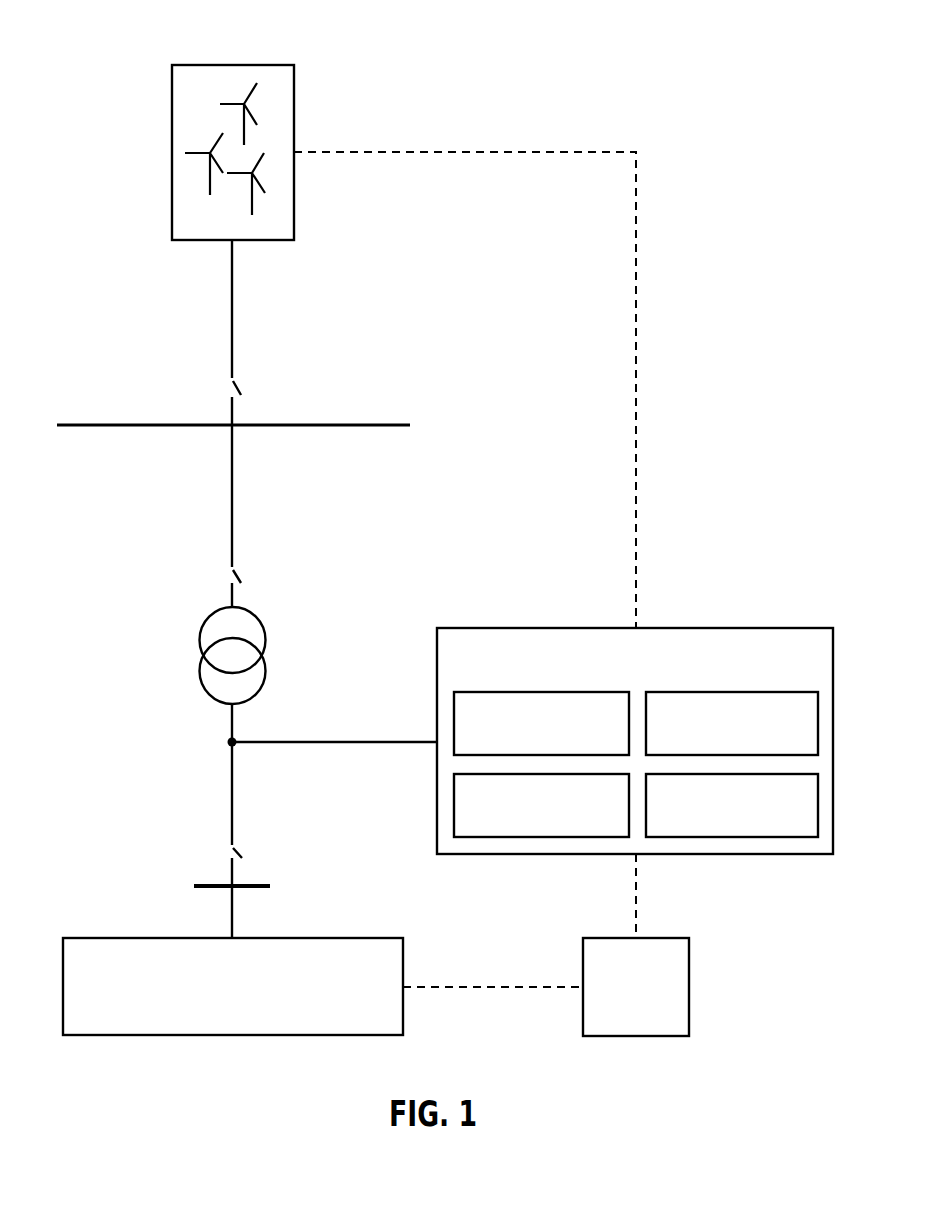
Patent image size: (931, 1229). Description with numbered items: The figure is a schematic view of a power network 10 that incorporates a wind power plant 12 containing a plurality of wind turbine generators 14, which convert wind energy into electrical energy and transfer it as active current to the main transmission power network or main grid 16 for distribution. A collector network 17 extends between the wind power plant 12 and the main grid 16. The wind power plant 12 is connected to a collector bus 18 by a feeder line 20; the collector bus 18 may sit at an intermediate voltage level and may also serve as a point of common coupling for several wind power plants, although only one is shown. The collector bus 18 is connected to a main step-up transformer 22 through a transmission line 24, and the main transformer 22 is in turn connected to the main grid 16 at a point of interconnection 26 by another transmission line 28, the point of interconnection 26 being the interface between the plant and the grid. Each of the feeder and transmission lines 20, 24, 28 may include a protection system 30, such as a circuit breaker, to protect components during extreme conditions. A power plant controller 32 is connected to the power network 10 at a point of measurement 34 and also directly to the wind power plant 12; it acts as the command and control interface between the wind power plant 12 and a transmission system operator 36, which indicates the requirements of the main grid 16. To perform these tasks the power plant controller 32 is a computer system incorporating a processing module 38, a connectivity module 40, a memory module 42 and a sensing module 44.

The power network 10 is at (672, 36).
The wind power plant 12 is at (296, 90).
The wind turbine generators 14 is at (214, 88).
The main transmission power network 16 is at (105, 937).
The collector network 17 is at (78, 358).
The collector bus 18 is at (385, 423).
The feeder line 20 is at (233, 312).
The main step-up transformer 22 is at (255, 610).
The transmission line 24 is at (234, 503).
The point of interconnection 26 is at (263, 883).
The transmission line 28 is at (235, 722).
The protection system 30 is at (243, 380).
The power plant controller 32 is at (493, 627).
The point of measurement 34 is at (220, 738).
The transmission system operator 36 is at (620, 937).
The processing module 38 is at (510, 690).
The connectivity module 40 is at (763, 690).
The memory module 42 is at (492, 838).
The sensing module 44 is at (797, 838).